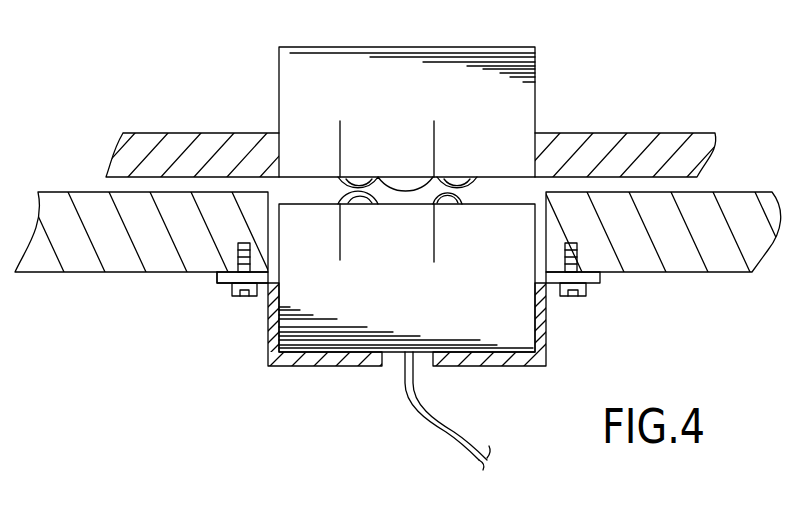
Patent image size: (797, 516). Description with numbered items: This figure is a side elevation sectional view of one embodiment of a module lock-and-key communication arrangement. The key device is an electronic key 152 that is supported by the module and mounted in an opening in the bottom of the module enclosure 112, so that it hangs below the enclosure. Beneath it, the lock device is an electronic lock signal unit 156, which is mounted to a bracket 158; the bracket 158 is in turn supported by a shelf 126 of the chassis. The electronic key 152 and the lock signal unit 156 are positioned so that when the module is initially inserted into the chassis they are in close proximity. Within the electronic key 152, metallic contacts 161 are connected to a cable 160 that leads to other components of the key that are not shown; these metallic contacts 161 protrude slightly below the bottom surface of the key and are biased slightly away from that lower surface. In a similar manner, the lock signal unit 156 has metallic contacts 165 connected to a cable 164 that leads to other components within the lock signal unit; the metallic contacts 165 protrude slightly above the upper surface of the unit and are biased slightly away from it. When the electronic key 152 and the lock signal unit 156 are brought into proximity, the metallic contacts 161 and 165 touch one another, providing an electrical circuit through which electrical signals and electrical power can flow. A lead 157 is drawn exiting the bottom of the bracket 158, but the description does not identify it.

The module enclosure 112 is at (187, 133).
The shelf 126 is at (97, 273).
The electronic key 152 is at (455, 47).
The lock signal unit 156 is at (492, 318).
The cable / wire 157 is at (410, 413).
The bracket 158 is at (268, 337).
The cable 160 is at (401, 176).
The metallic contacts 161 is at (338, 138).
The cable 164 is at (340, 202).
The metallic contacts 165 is at (434, 236).